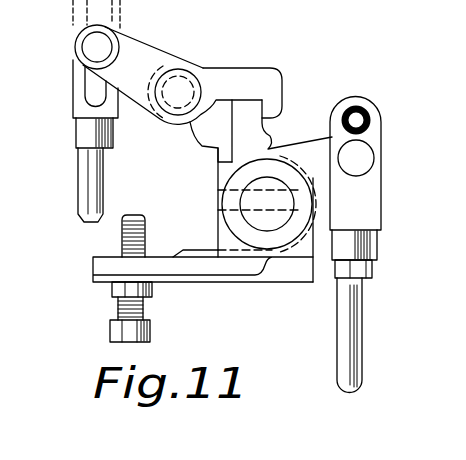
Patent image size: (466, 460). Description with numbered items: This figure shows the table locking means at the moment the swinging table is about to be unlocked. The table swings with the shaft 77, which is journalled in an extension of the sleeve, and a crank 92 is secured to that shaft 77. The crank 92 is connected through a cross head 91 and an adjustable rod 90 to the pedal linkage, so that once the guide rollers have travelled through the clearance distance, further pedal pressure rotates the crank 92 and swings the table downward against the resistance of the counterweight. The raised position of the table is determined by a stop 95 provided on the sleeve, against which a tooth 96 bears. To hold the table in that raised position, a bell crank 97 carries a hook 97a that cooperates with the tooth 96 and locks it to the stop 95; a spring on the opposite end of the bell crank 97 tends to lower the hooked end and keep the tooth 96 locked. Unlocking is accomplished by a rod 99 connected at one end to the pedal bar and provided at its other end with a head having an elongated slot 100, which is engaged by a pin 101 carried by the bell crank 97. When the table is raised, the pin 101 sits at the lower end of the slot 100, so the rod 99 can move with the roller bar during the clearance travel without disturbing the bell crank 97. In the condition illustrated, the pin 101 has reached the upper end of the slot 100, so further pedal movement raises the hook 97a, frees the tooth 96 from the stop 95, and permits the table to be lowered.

The shaft 77 is at (273, 222).
The adjustable rod 90 is at (350, 313).
The cross head 91 is at (358, 212).
The crank 92 is at (320, 183).
The stop 95 is at (210, 152).
The tooth 96 is at (262, 120).
The bell crank 97 is at (225, 78).
The hook 97a is at (278, 100).
The rod 99 is at (85, 185).
The elongated slot 100 is at (82, 97).
The pin 101 is at (88, 48).